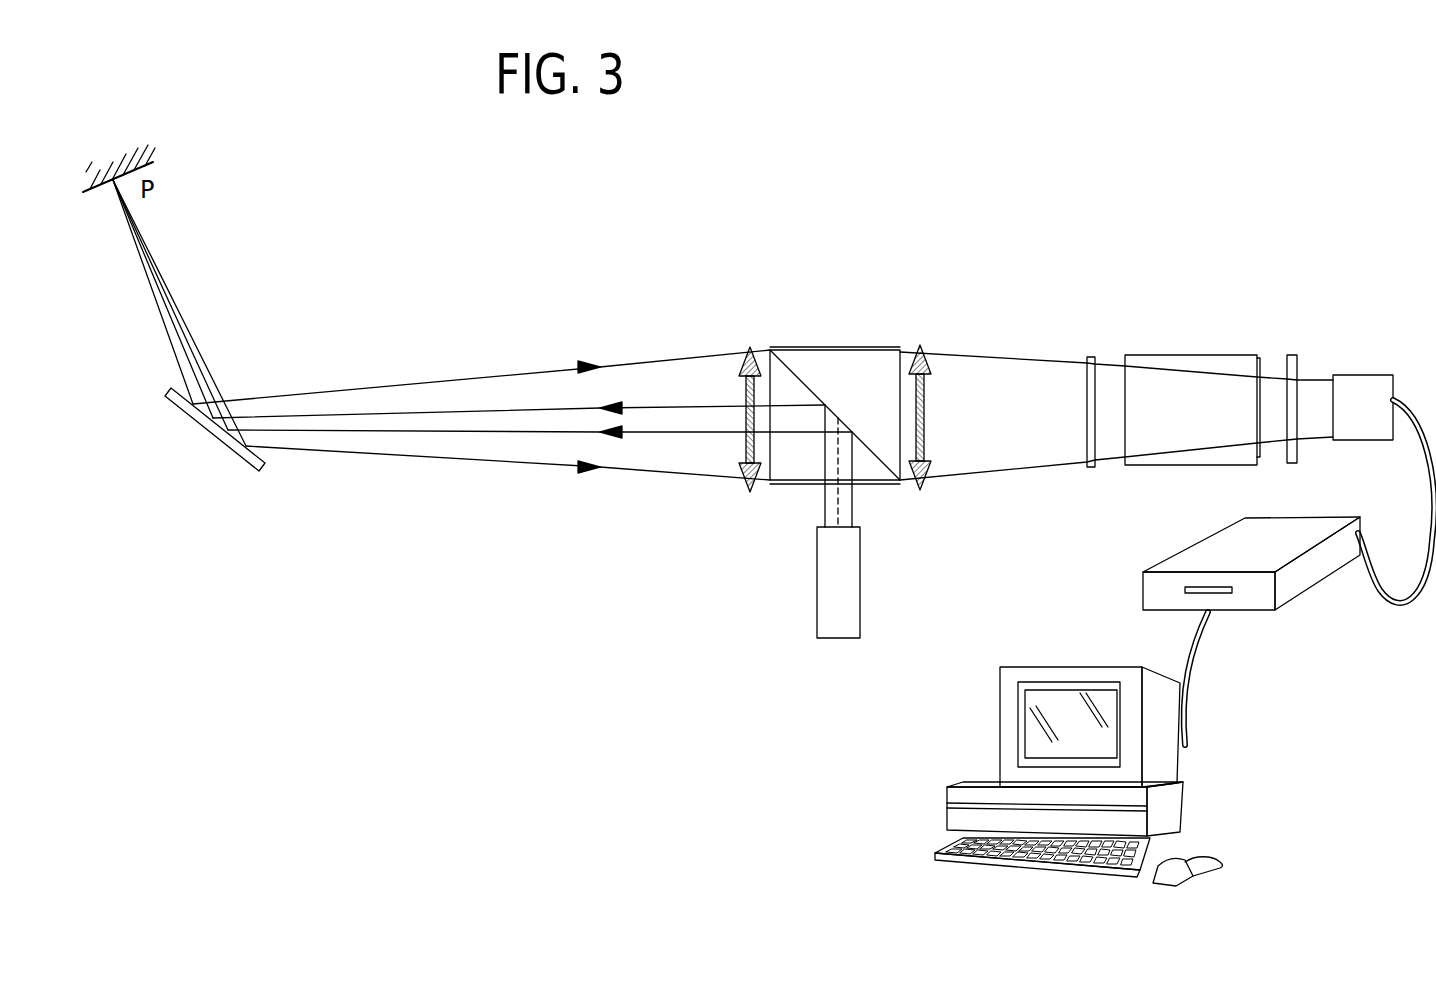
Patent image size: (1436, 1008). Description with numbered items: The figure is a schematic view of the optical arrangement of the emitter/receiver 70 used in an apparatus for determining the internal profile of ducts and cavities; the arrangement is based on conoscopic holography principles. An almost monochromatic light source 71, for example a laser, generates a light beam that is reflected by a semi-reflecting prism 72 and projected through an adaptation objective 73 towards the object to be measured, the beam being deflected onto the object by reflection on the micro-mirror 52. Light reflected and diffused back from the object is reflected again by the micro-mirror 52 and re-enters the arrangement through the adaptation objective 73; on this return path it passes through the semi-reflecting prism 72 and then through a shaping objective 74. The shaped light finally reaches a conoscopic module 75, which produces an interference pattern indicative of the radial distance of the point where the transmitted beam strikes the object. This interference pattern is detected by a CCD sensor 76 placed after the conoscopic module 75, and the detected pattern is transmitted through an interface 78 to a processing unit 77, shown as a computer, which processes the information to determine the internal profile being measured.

The micro-mirror 52 is at (190, 424).
The emitter/receiver 70 is at (1072, 335).
The light source 71 is at (817, 580).
The semi-reflecting prism 72 is at (832, 348).
The adaptation objective 73 is at (750, 347).
The shaping objective 74 is at (920, 345).
The conoscopic module 75 is at (1190, 355).
The CCD sensor 76 is at (1367, 375).
The processing unit 77 is at (1172, 747).
The interface 78 is at (1315, 583).